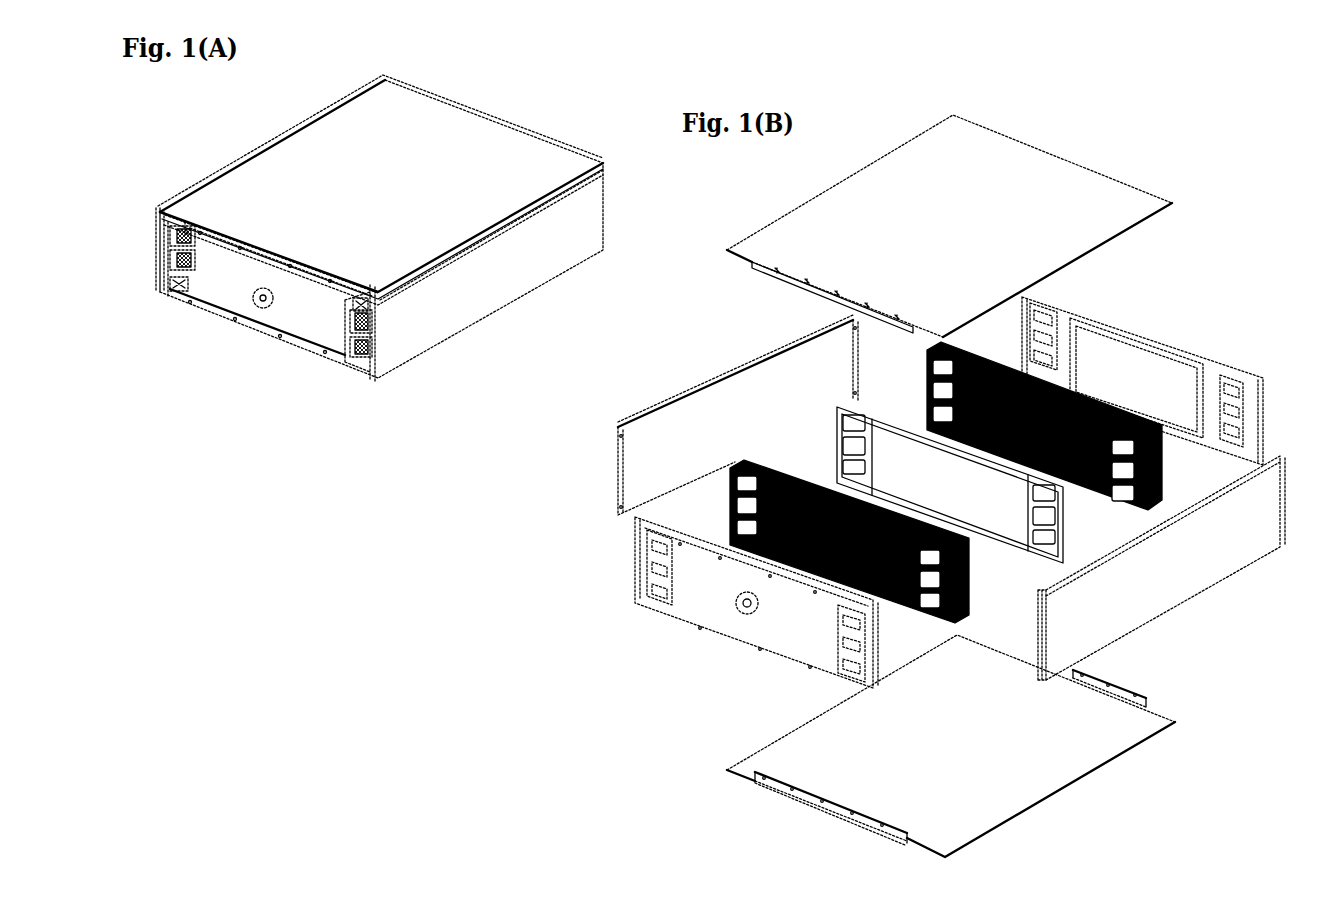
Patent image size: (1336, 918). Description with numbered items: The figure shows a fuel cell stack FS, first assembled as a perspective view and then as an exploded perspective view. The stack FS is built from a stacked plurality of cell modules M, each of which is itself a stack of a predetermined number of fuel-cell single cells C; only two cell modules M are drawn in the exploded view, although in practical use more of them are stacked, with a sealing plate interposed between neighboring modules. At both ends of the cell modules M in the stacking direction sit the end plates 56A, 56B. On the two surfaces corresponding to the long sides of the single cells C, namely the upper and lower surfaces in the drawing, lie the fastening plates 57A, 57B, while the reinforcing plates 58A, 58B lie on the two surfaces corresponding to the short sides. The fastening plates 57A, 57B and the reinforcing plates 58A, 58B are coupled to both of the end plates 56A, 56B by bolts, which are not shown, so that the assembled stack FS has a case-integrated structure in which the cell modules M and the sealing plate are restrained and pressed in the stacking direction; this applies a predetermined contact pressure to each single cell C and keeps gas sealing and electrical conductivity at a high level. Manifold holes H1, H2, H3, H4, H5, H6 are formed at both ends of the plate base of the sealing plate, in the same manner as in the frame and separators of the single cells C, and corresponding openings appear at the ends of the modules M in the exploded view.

In FIG. 1A, the fuel cell stack FS is at (533, 84).
In FIG. 1A, the fastening plate 57A is at (345, 148).
In FIG. 1B, the fastening plate 57A is at (895, 185).
In FIG. 1B, the fastening plate 57B is at (1073, 770).
In FIG. 1A, the reinforcing plate 58A is at (233, 165).
In FIG. 1B, the reinforcing plate 58A is at (740, 362).
In FIG. 1A, the reinforcing plate 58B is at (498, 300).
In FIG. 1B, the reinforcing plate 58B is at (1187, 600).
In FIG. 1A, the end plate 56A is at (243, 298).
In FIG. 1B, the end plate 56A is at (692, 590).
In FIG. 1B, the end plate 56B is at (1168, 338).
In FIG. 1A, the manifold hole H1 is at (178, 238).
In FIG. 1B, the manifold hole H1 is at (948, 345).
In FIG. 1A, the manifold hole H2 is at (180, 262).
In FIG. 1B, the manifold hole H2 is at (920, 370).
In FIG. 1A, the manifold hole H3 is at (180, 283).
In FIG. 1B, the manifold hole H3 is at (925, 415).
In FIG. 1A, the manifold hole H4 is at (358, 306).
In FIG. 1B, the manifold hole H4 is at (1140, 452).
In FIG. 1A, the manifold hole H5 is at (372, 325).
In FIG. 1B, the manifold hole H5 is at (1145, 477).
In FIG. 1A, the manifold hole H6 is at (362, 352).
In FIG. 1B, the manifold hole H6 is at (1142, 492).
In FIG. 1B, the fuel-cell single cell C is at (1040, 395).
In FIG. 1B, the cell module M is at (1125, 405).